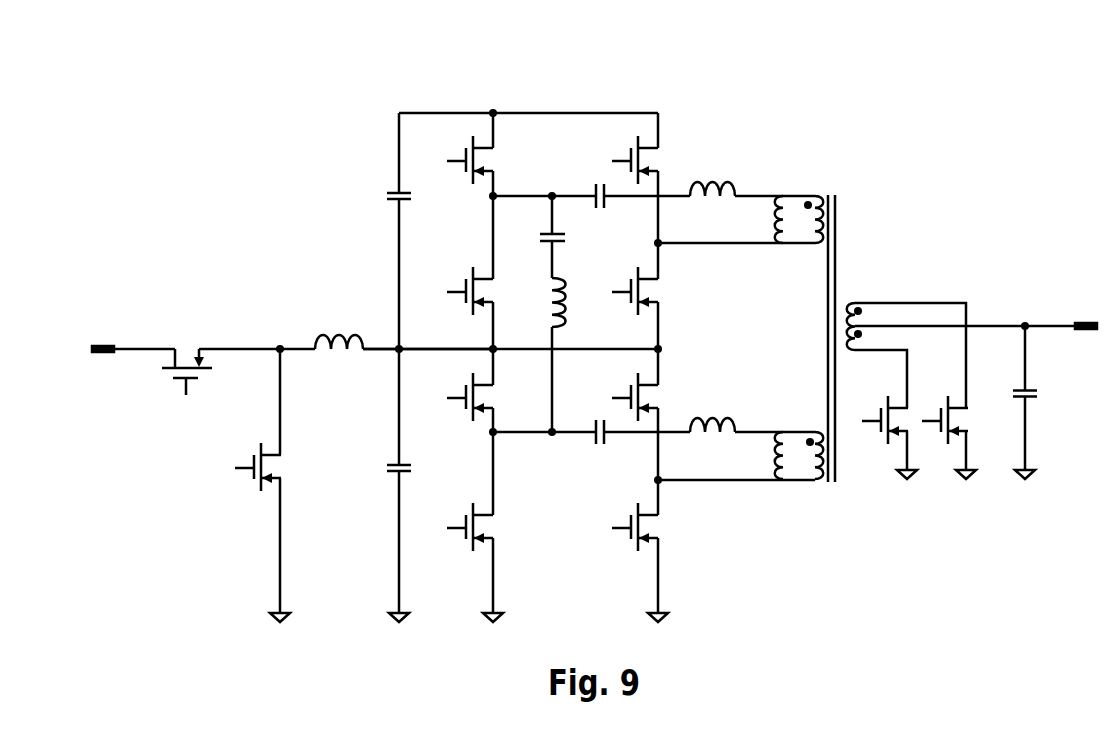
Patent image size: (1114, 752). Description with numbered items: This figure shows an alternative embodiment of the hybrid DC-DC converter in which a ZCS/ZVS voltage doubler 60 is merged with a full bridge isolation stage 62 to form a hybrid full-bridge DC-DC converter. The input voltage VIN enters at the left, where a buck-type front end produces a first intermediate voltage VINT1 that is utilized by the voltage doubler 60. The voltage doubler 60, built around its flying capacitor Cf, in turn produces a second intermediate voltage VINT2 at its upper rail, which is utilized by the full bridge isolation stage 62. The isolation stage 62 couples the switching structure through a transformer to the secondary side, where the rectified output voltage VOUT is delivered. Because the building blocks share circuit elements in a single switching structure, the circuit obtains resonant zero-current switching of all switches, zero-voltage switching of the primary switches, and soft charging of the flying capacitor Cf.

The ZCS/ZVS voltage doubler 60 is at (441, 70).
The full bridge isolation stage 62 is at (802, 121).
The flying capacitor Cf is at (568, 237).
The input voltage VIN is at (133, 330).
The first intermediate voltage VINT1 is at (422, 324).
The second intermediate voltage VINT2 is at (528, 97).
The output voltage VOUT is at (1061, 309).